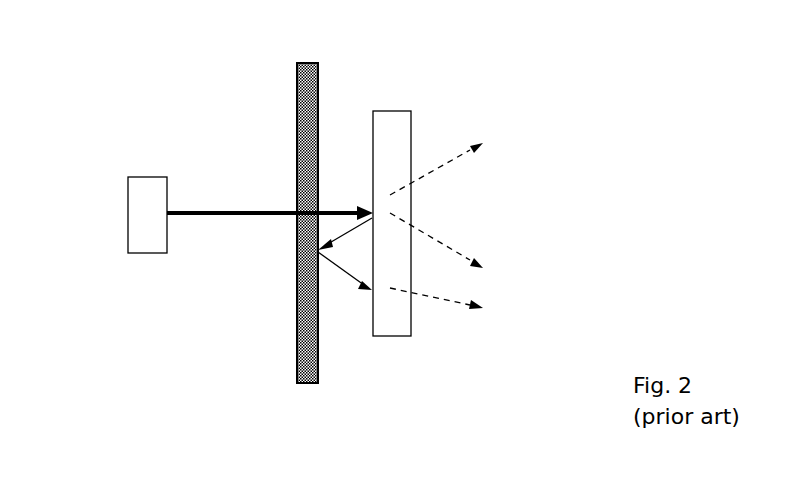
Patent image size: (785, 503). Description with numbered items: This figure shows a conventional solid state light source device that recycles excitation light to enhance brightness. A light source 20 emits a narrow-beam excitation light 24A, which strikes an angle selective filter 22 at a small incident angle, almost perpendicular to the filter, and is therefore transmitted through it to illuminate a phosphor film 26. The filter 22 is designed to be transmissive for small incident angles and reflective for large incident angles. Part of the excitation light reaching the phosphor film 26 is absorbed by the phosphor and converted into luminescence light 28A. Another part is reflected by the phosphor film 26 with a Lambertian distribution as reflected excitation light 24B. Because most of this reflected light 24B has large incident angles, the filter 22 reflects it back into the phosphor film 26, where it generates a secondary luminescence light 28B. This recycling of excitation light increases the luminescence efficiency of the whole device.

The light source 20 is at (138, 195).
The filter 22 is at (305, 372).
The excitation light 24A is at (243, 213).
The reflected excitation light 24B is at (352, 275).
The phosphor film 26 is at (392, 139).
The luminescence light 28A is at (453, 250).
The secondary luminescence light 28B is at (447, 298).